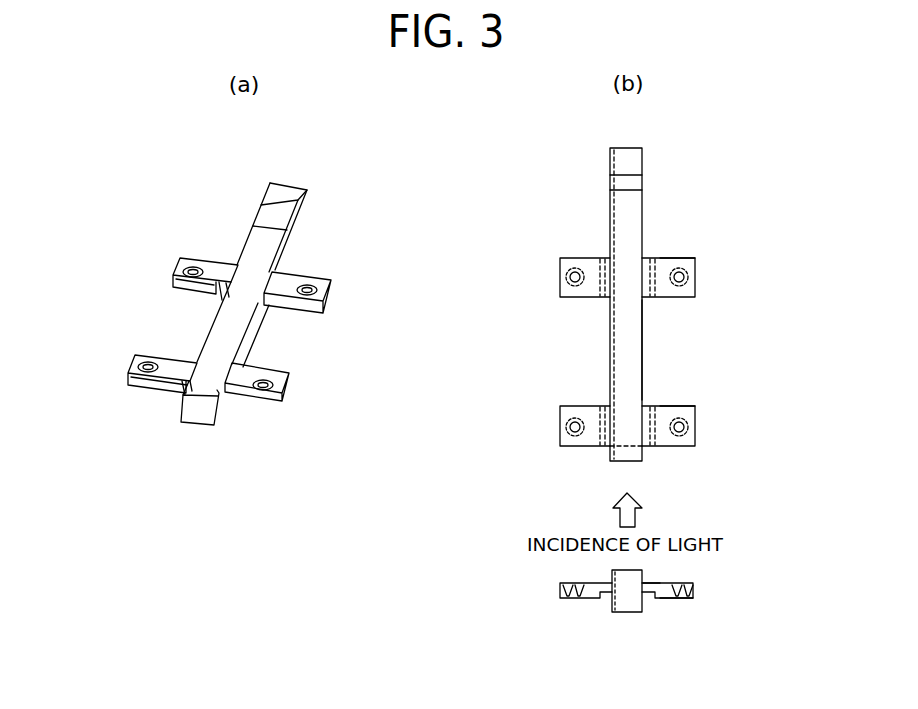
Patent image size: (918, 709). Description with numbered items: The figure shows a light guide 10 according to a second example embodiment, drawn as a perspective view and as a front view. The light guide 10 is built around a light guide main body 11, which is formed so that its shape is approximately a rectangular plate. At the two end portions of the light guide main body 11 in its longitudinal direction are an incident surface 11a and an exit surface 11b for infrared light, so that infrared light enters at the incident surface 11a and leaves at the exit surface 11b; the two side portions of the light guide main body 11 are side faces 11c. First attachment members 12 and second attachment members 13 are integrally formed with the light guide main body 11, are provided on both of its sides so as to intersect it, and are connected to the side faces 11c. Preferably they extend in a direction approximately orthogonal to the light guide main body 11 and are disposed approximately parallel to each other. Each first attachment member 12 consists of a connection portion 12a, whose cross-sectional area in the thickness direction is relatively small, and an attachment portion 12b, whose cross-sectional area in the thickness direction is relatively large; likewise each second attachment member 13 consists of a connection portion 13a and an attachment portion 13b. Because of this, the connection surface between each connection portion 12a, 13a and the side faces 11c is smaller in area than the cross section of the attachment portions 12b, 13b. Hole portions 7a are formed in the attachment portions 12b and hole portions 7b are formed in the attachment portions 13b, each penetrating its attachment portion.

The light guide 10 is at (211, 217).
The light guide main body 11 is at (276, 248).
The incident surface 11a is at (200, 410).
The exit surface 11b is at (289, 195).
The side faces 11c is at (643, 345).
The first attachment members 12 is at (205, 262).
The connection portions 12a is at (217, 290).
The attachment portions 12b is at (178, 272).
The hole portions 7a is at (186, 270).
The second attachment members 13 is at (138, 386).
The connection portions 13a is at (178, 378).
The attachment portions 13b is at (137, 372).
The hole portions 7b is at (147, 360).